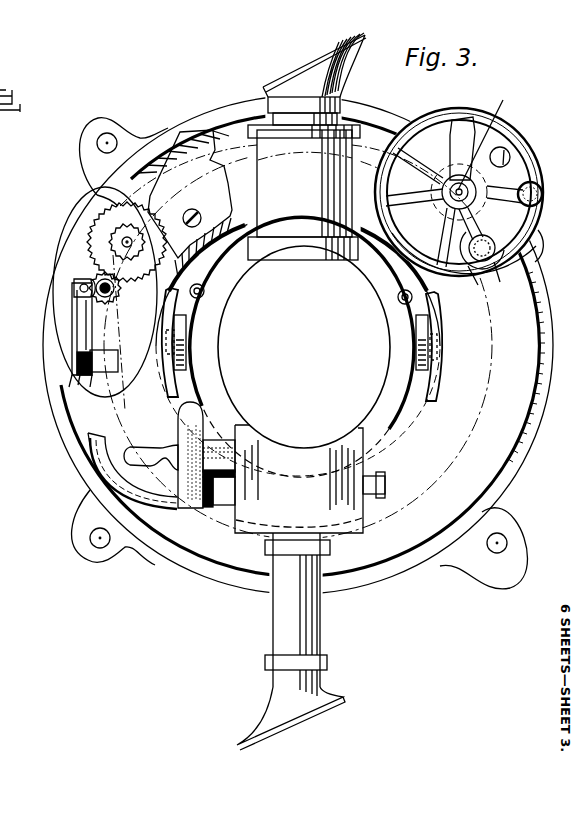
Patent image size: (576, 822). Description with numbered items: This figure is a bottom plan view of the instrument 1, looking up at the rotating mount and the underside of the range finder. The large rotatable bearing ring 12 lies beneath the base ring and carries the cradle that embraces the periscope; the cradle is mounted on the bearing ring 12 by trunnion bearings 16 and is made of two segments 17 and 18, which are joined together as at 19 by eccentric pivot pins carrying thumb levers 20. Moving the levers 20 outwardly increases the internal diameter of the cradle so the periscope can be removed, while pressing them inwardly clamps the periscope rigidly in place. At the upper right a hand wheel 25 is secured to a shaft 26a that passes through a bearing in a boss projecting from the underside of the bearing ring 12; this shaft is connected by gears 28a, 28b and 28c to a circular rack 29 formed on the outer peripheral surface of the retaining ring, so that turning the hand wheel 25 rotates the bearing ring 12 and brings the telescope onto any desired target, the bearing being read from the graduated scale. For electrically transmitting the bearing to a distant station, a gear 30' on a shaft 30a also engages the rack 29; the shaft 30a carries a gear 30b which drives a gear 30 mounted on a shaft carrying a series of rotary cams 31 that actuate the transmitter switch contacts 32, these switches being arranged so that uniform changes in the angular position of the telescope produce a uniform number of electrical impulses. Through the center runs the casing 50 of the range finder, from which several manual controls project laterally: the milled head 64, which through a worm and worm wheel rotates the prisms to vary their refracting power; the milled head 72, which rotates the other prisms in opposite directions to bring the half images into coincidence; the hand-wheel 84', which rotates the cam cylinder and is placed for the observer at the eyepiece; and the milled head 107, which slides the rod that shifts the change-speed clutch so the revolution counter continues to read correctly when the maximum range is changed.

The bearing ring 12 is at (520, 455).
The trunnion bearings 16 is at (182, 336).
The cradle segment 17 is at (236, 260).
The cradle segment 18 is at (205, 388).
The joint of cradle segments 19 is at (207, 277).
The thumb levers 20 is at (199, 353).
The hand wheel 25 is at (430, 118).
The shaft 26a is at (503, 110).
The gear 28a is at (524, 140).
The gear 28b is at (540, 245).
The gear 28c is at (496, 262).
The circular rack 29 is at (184, 203).
The gear 30 is at (105, 298).
The shaft 30a is at (122, 240).
The gear 30b is at (97, 195).
The gear 30' is at (94, 241).
The rotary cams 31 is at (90, 278).
The transmitter switch contacts 32 is at (72, 340).
The casing 50 is at (272, 505).
The milled head 64 is at (325, 600).
The milled head 72 is at (275, 575).
The hand-wheel 84' is at (161, 497).
The milled head 107 is at (382, 484).
The instrument 1 is at (552, 322).